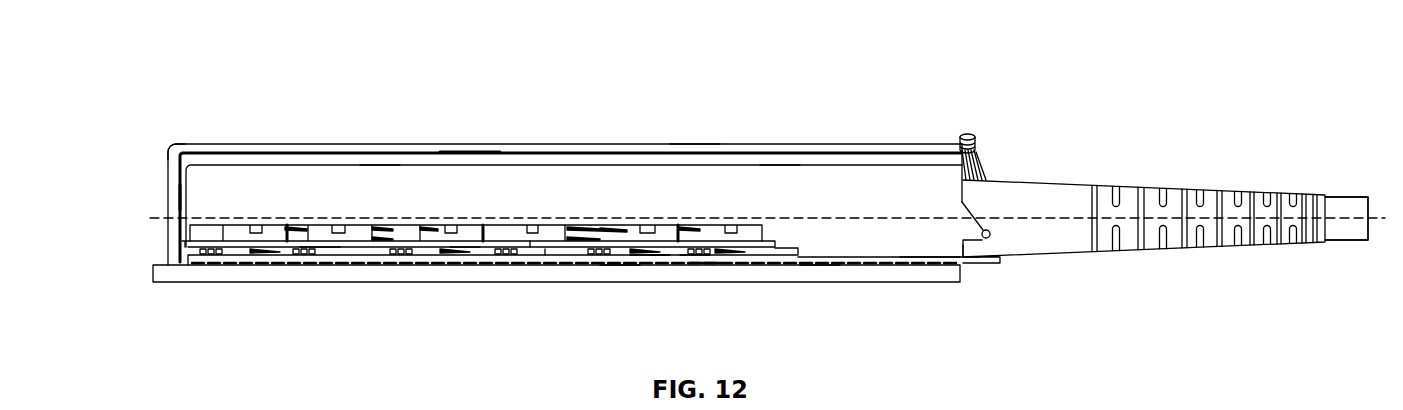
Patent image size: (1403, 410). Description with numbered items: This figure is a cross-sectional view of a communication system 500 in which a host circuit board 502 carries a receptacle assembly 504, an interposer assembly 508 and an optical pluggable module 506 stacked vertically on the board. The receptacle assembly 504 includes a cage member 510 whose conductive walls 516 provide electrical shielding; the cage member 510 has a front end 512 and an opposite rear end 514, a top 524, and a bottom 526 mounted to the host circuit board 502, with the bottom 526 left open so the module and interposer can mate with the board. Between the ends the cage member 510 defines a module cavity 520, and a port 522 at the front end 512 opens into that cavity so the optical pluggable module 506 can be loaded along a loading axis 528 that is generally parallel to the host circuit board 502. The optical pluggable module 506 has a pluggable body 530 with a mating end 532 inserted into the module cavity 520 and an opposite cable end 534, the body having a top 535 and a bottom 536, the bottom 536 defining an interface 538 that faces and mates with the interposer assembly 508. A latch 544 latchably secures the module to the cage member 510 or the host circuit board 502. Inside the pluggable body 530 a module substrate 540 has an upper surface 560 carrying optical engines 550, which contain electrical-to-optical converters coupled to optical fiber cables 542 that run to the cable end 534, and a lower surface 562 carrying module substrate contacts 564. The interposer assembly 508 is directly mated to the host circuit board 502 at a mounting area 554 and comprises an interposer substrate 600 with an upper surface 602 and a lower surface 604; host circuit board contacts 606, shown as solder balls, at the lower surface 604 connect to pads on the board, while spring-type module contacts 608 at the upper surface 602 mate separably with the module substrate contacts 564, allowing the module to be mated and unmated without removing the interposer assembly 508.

The communication system 500 is at (866, 60).
The host circuit board 502 is at (890, 272).
The receptacle assembly 504 is at (240, 138).
The optical pluggable module 506 is at (926, 243).
The interposer assembly 508 is at (333, 258).
The cage member 510 is at (467, 150).
The front end 512 is at (983, 150).
The rear end 514 is at (165, 150).
The walls 516 is at (627, 152).
The module cavity 520 is at (773, 158).
The port 522 is at (977, 157).
The top 524 is at (695, 145).
The bottom 526 is at (818, 265).
The loading axis 528 is at (1385, 222).
The pluggable body 530 is at (373, 178).
The mating end 532 is at (181, 197).
The cable end 534 is at (972, 254).
The top 535 is at (557, 163).
The bottom 536 is at (840, 262).
The interface 538 is at (288, 242).
The module substrate 540 is at (462, 245).
The optical fiber cables 542 is at (298, 227).
The latch 544 is at (968, 132).
The optical engines 550 is at (245, 233).
The mounting area 554 is at (692, 257).
The upper surface 560 is at (541, 236).
The lower surface 562 is at (558, 248).
The module substrate contacts 564 is at (490, 256).
The interposer substrate 600 is at (647, 258).
The upper surface 602 is at (653, 256).
The lower surface 604 is at (622, 266).
The host circuit board contacts 606 is at (706, 262).
The module contacts 608 is at (317, 247).